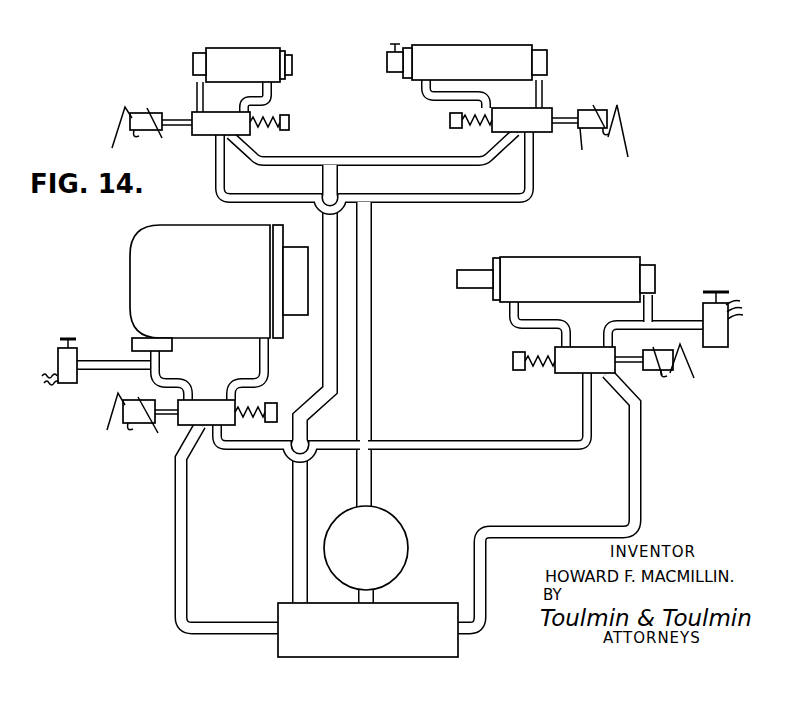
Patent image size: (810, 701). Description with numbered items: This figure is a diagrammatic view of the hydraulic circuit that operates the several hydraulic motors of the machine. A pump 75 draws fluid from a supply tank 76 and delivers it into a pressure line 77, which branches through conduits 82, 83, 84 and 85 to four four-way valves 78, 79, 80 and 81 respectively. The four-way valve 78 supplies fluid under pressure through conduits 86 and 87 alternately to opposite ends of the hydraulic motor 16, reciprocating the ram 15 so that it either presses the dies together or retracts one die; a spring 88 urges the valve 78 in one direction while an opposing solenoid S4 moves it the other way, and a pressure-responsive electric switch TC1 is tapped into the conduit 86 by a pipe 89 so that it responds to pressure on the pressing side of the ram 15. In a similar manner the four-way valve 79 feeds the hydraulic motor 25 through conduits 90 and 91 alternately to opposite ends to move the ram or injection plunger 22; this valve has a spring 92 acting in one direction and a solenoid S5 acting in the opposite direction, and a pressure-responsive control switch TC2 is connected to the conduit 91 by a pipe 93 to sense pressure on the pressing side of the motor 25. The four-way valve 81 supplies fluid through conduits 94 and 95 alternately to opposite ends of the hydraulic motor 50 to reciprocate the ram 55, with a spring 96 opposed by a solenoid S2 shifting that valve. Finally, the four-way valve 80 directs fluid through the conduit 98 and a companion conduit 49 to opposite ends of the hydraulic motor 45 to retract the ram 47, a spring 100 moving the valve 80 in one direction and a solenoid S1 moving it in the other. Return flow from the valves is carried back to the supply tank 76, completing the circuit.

The hydraulic motor 45 is at (257, 32).
The ram 47 is at (292, 64).
The conduit 49 is at (272, 91).
The conduit 98 is at (196, 93).
The 4-way valve 80 is at (212, 120).
The spring 100 is at (278, 112).
The solenoid S1 is at (137, 115).
The conduit 84 is at (302, 178).
The conduit 85 is at (451, 175).
The ram 55 is at (393, 51).
The hydraulic motor 50 is at (487, 68).
The conduit 95 is at (544, 81).
The conduit 94 is at (442, 98).
The 4-way valve 81 is at (518, 116).
The spring 96 is at (470, 128).
The solenoid S2 is at (590, 133).
The hydraulic motor 16 is at (194, 266).
The ram 15 is at (295, 253).
The pressure-responsive electric switch TC1 is at (58, 363).
The pipe 89 is at (110, 362).
The conduit 86 is at (177, 380).
The conduit 87 is at (248, 376).
The 4-way valve 78 is at (212, 398).
The spring 88 is at (260, 406).
The solenoid S4 is at (133, 402).
The conduit 82 is at (341, 420).
The pressure line 77 is at (373, 384).
The conduit 83 is at (518, 439).
The injection plunger 22 is at (477, 253).
The hydraulic motor 25 is at (593, 287).
The conduit 90 is at (512, 315).
The conduit 91 is at (630, 328).
The pipe 93 is at (690, 322).
The 4-way valve 79 is at (575, 358).
The spring 92 is at (529, 352).
The solenoid S5 is at (658, 372).
The pressure-responsive control switch TC2 is at (732, 319).
The pump 75 is at (388, 530).
The supply tank 76 is at (431, 612).